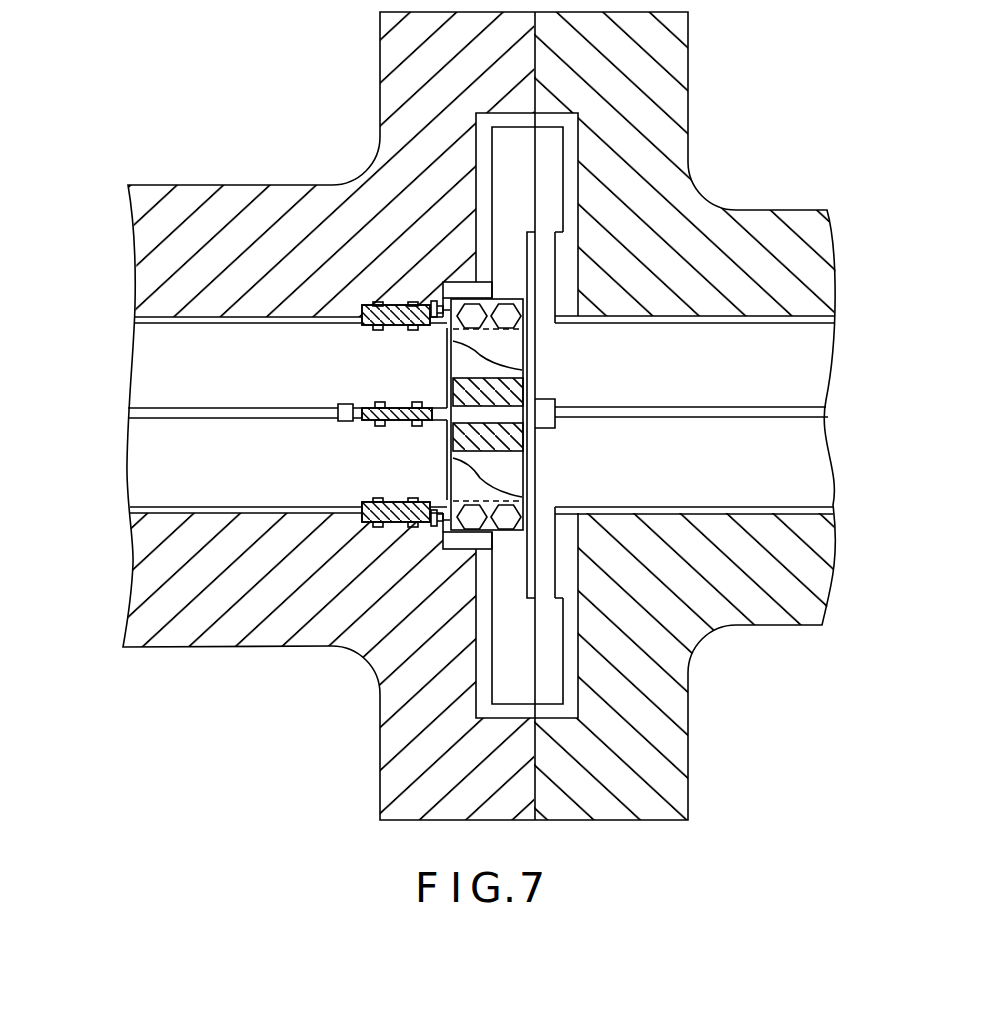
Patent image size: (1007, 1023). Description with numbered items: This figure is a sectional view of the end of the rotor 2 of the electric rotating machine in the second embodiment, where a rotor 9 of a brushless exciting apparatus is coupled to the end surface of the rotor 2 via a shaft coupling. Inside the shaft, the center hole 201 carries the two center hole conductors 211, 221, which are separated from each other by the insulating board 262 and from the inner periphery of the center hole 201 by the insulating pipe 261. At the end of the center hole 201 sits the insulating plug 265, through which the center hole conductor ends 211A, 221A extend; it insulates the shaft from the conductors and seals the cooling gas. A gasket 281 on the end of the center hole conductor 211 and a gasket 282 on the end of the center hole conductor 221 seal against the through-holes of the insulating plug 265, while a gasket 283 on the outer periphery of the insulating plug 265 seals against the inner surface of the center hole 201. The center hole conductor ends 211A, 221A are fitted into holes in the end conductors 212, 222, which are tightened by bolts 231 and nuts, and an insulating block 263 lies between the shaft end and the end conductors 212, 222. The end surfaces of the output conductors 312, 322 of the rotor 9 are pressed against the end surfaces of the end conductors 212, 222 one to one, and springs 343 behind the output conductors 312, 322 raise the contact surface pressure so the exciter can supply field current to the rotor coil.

The rotor 2 is at (230, 138).
The rotor in a brushless exciting apparatus 9 is at (777, 178).
The center hole 201 is at (175, 314).
The center hole conductor 211 is at (147, 361).
The end conductor 212 is at (507, 157).
The center hole conductor 221 is at (147, 463).
The end conductor 222 is at (497, 622).
The bolt 231 is at (508, 515).
The insulating pipe 261 is at (157, 503).
The insulating board 262 is at (157, 408).
The insulating block 263 is at (456, 288).
The insulating plug 265 is at (404, 328).
The gasket 281 is at (373, 329).
The gasket 282 is at (373, 500).
The gasket 283 is at (389, 498).
The output conductor 312 is at (550, 273).
The output conductor 322 is at (550, 547).
The spring 343 is at (558, 157).
The center hole conductor end 211A is at (497, 370).
The center hole conductor end 221A is at (497, 462).